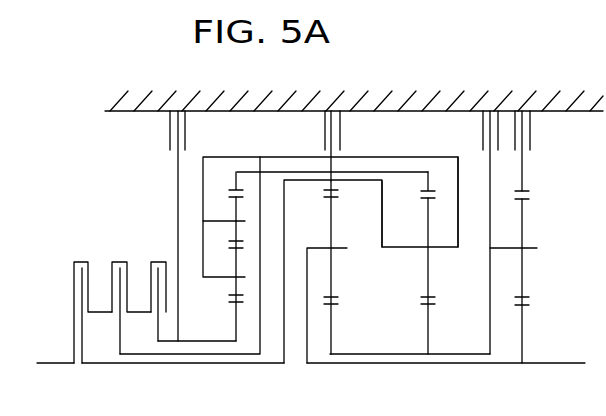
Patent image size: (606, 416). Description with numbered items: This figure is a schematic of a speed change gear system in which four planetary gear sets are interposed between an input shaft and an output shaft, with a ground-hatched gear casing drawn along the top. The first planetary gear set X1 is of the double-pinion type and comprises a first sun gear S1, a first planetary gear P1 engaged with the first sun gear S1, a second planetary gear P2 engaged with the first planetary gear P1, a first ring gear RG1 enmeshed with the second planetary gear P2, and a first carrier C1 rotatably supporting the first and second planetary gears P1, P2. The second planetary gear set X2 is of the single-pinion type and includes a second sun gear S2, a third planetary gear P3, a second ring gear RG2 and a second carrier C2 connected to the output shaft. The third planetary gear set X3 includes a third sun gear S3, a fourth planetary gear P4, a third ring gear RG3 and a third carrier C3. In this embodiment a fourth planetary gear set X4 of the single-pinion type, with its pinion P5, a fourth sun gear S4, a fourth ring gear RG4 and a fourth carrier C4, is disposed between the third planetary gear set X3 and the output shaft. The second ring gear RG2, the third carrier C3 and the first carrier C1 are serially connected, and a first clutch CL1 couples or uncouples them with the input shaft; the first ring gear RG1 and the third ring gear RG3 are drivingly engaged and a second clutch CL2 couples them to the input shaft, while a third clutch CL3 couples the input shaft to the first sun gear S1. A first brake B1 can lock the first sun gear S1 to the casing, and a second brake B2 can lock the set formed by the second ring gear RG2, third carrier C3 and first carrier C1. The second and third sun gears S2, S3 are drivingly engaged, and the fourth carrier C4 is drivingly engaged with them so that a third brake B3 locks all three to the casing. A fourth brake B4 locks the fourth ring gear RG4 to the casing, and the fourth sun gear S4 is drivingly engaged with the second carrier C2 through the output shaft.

The first brake B1 is at (189, 226).
The second brake B2 is at (345, 146).
The third brake B3 is at (473, 232).
The fourth brake B4 is at (537, 151).
The first clutch CL1 is at (74, 300).
The second clutch CL2 is at (118, 295).
The third clutch CL3 is at (149, 289).
The first ring gear RG1 is at (236, 187).
The second ring gear RG2 is at (338, 188).
The third ring gear RG3 is at (426, 183).
The fourth ring gear RG4 is at (523, 175).
The first planetary gear P1 is at (229, 287).
The second planetary gear P2 is at (240, 204).
The third planetary gear P3 is at (332, 250).
The fourth planetary gear P4 is at (428, 274).
The fifth planetary gear P5 is at (523, 276).
The first carrier C1 is at (218, 222).
The second carrier C2 is at (307, 249).
The third carrier C3 is at (395, 248).
The fourth carrier C4 is at (500, 250).
The first sun gear S1 is at (238, 317).
The second sun gear S2 is at (331, 315).
The third sun gear S3 is at (428, 317).
The fourth sun gear S4 is at (524, 320).
The first planetary gear set X1 is at (235, 306).
The second planetary gear set X2 is at (328, 312).
The third planetary gear set X3 is at (425, 309).
The fourth planetary gear set X4 is at (520, 311).